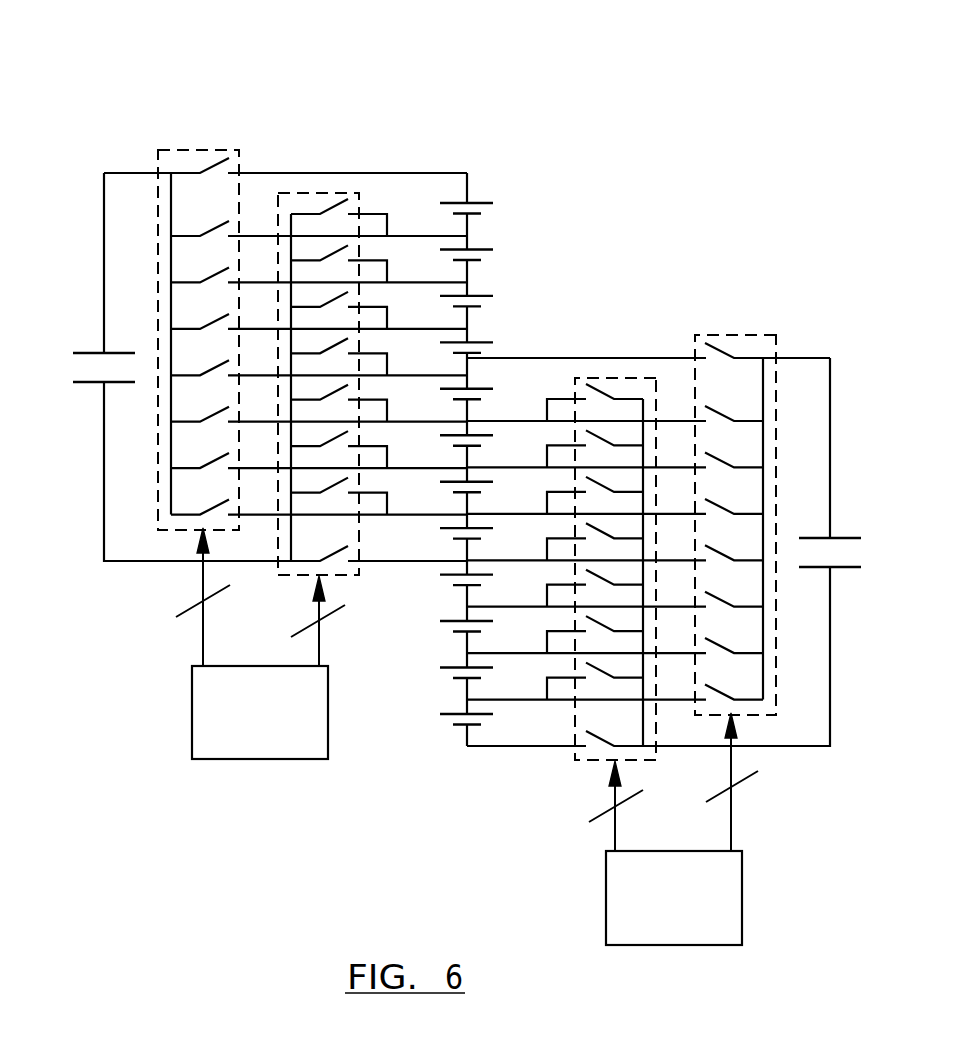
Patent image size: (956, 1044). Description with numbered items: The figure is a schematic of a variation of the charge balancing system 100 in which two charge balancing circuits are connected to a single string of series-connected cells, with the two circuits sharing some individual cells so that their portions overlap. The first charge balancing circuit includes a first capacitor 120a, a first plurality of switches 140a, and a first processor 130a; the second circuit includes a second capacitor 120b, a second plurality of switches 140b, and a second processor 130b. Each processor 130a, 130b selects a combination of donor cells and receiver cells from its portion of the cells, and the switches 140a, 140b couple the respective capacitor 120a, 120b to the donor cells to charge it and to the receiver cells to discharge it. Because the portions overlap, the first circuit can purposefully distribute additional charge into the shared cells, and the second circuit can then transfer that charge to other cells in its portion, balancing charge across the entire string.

The charge balancing system 100 is at (186, 69).
The first capacitor 120a is at (69, 372).
The second capacitor 120b is at (850, 577).
The first processor 130a is at (287, 729).
The second processor 130b is at (703, 914).
The first plurality of switches 140a is at (300, 192).
The second plurality of switches 140b is at (706, 334).